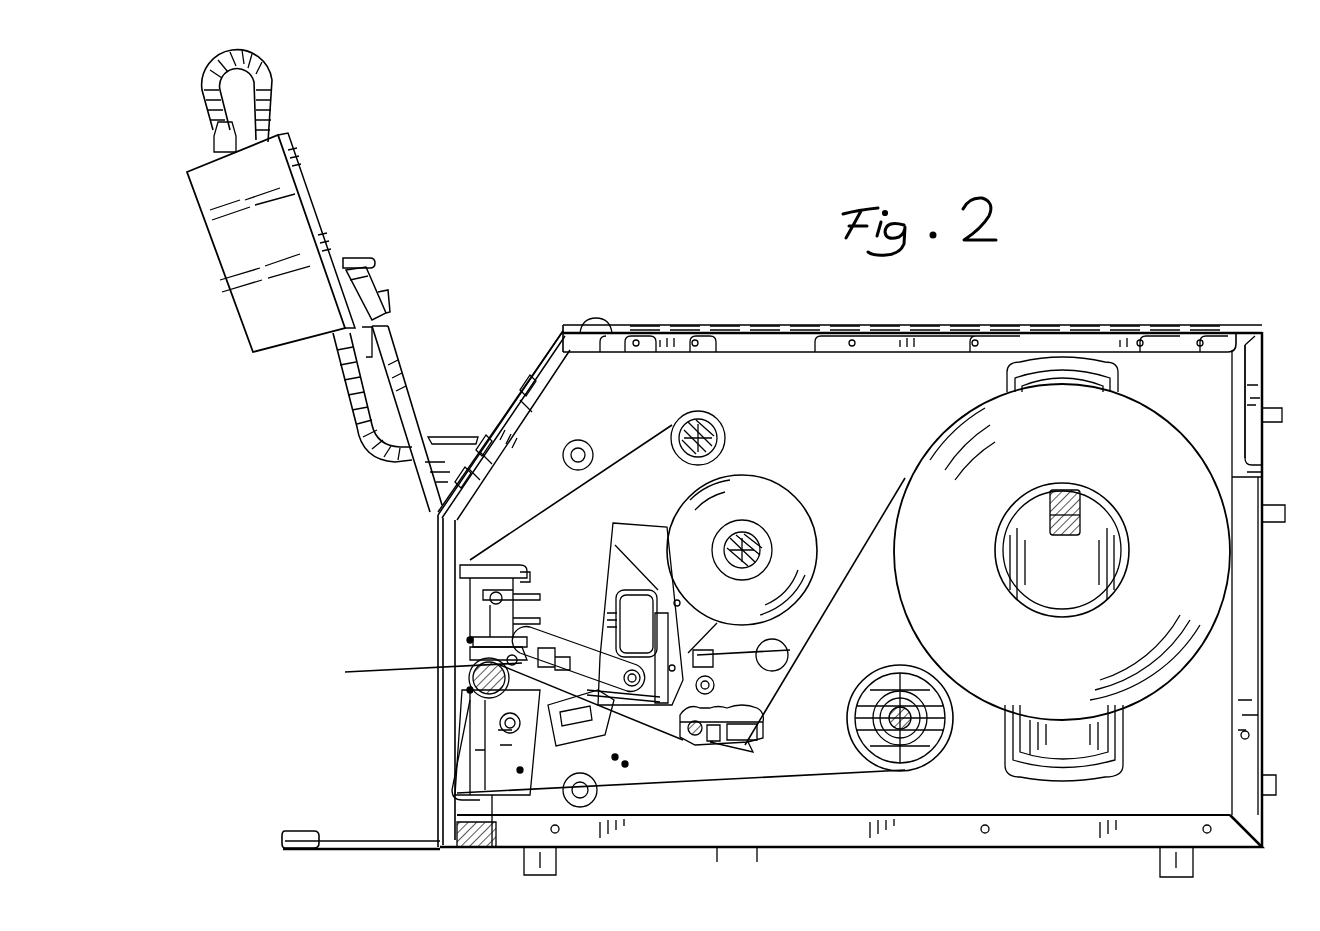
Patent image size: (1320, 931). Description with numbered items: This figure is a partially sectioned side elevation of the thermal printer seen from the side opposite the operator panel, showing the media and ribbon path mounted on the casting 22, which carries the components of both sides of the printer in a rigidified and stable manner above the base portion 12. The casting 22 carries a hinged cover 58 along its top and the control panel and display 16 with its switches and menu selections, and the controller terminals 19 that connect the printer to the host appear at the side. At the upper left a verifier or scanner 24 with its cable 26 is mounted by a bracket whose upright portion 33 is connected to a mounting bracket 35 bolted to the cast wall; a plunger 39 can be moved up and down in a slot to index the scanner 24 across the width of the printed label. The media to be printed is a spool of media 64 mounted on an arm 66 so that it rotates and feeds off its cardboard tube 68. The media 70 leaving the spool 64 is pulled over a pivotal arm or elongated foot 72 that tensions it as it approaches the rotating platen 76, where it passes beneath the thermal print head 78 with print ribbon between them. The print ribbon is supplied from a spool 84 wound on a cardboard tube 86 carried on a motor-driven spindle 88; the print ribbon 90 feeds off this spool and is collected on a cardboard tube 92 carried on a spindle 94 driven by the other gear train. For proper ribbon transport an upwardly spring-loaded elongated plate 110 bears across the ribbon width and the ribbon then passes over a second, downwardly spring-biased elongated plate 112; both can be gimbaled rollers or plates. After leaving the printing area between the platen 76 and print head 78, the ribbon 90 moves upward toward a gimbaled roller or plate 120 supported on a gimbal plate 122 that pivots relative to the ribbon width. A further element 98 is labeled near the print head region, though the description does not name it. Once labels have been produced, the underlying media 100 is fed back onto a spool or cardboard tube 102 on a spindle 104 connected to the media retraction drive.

The base portion 12 is at (925, 847).
The control panel and display 16 is at (515, 366).
The terminals 19 is at (1289, 448).
The casting 22 is at (878, 417).
The verifier or scanner 24 is at (262, 313).
The cable 26 is at (268, 118).
The upright portion 33 is at (408, 378).
The mounting bracket 35 is at (415, 482).
The plunger 39 is at (352, 255).
The hinged cover 58 is at (712, 325).
The spool of media 64 is at (1152, 413).
The arm 66 is at (1080, 500).
The cardboard tube 68 is at (1130, 537).
The media 70 is at (838, 598).
The pivotal arm or elongated foot 72 is at (760, 722).
The rotating platen 76 is at (470, 680).
The thermal print head 78 is at (490, 655).
The spool of print ribbon 84 is at (785, 520).
The cardboard tube 86 is at (740, 525).
The spindle 88 is at (760, 552).
The print ribbon 90 is at (625, 450).
The cardboard tube 92 is at (725, 438).
The spindle 94 is at (682, 420).
The media path line 98 is at (348, 672).
The underlying media 100 is at (815, 790).
The spool or cardboard tube 102 is at (905, 770).
The spindle 104 is at (885, 700).
The spring loaded elongated plate 110 is at (714, 684).
The second spring biased elongated plate 112 is at (650, 725).
The roller or plate 120 is at (430, 568).
The gimbal plate 122 is at (520, 572).